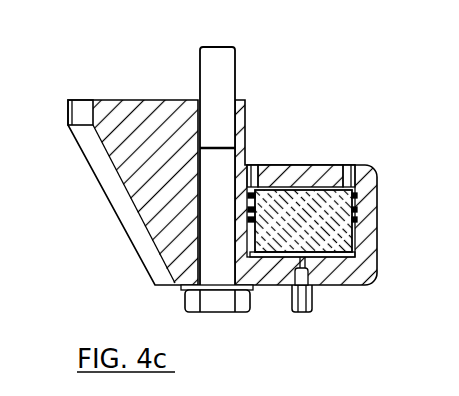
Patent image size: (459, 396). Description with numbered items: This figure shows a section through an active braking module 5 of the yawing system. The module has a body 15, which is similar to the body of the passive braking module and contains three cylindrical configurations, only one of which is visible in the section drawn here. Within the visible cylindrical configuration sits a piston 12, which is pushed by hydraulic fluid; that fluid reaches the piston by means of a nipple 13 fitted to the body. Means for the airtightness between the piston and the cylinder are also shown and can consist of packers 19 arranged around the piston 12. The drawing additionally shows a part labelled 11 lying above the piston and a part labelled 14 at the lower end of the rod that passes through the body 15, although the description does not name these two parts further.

The active braking module 5 is at (284, 92).
The insert 11 is at (315, 177).
The piston 12 is at (310, 227).
The nipple 13 is at (303, 298).
The nut 14 is at (223, 300).
The body 15 is at (142, 140).
The packer 19 is at (353, 220).